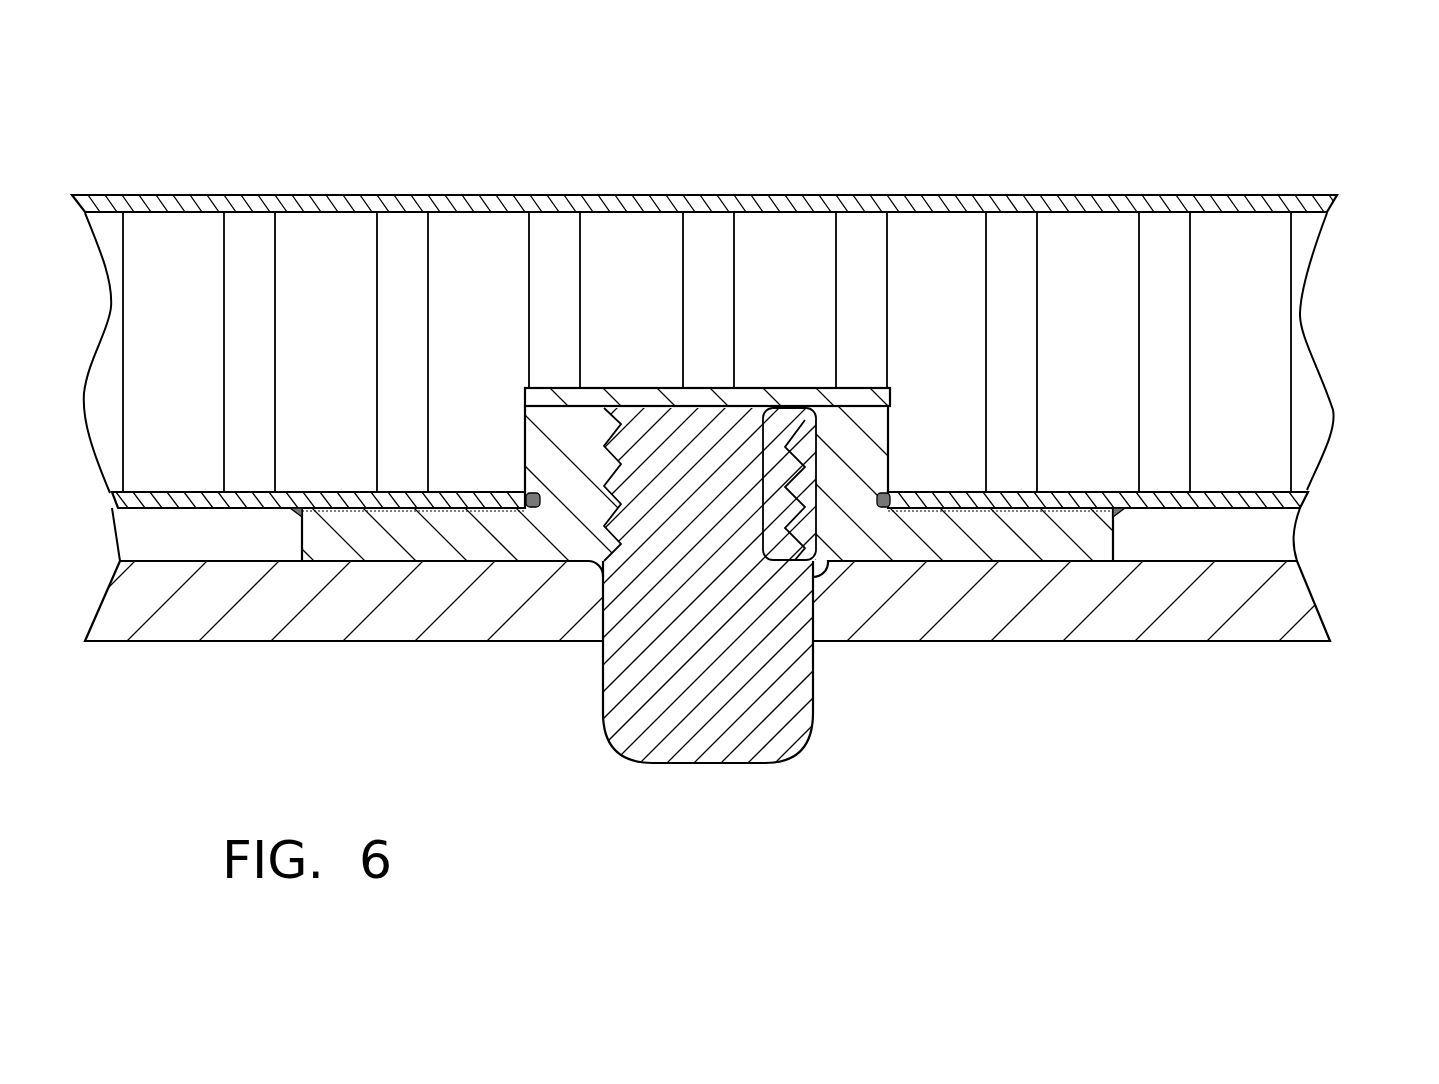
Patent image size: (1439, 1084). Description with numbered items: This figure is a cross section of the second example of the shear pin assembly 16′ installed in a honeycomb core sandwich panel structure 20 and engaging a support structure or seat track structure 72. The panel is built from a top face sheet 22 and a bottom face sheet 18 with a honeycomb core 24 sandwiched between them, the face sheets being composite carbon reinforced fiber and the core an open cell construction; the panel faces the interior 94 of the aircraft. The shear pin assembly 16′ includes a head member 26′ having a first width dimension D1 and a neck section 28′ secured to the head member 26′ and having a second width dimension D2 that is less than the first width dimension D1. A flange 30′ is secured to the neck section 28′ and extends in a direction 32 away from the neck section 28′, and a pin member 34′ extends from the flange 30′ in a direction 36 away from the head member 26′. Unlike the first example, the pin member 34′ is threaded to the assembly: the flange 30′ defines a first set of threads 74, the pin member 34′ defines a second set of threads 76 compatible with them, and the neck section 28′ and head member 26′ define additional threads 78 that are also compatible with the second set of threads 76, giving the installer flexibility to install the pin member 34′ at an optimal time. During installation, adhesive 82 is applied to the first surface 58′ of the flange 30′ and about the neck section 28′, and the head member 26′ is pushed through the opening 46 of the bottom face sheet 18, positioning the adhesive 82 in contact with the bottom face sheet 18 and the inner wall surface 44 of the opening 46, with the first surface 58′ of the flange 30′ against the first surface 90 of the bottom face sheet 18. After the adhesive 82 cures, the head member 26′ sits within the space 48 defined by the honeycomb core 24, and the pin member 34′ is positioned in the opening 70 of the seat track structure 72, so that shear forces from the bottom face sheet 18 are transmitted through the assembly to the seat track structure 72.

The shear pin assembly 16′ is at (857, 323).
The bottom face sheet 18 is at (217, 510).
The honeycomb core sandwich panel structure 20 is at (1340, 290).
The top face sheet 22 is at (712, 207).
The honeycomb core 24 is at (416, 394).
The head member 26′ is at (735, 378).
The neck section 28′ is at (565, 523).
The flange 30′ is at (343, 533).
The direction 32 is at (453, 525).
The pin member 34′ is at (660, 710).
The direction 36 is at (708, 892).
The inner wall surface 44 is at (532, 490).
The opening 46 is at (617, 527).
The space 48 is at (522, 395).
The first surface 58′ is at (300, 512).
The opening 70 is at (815, 612).
The support structure or seat track structure 72 is at (332, 623).
The first set of threads 74 is at (817, 565).
The second set of threads 76 is at (760, 482).
The additional threads 78 is at (830, 442).
The adhesive 82 is at (302, 515).
The first surface 90 is at (145, 511).
The interior 94 is at (1163, 133).
The first width dimension D1 is at (888, 404).
The second width dimension D2 is at (877, 502).